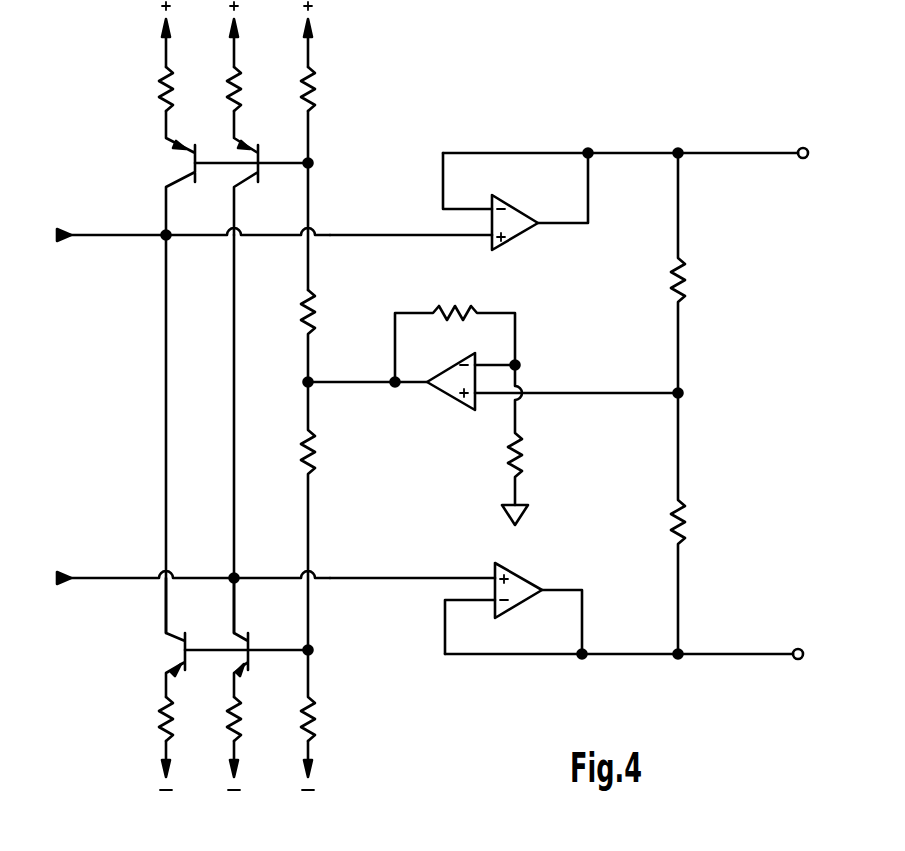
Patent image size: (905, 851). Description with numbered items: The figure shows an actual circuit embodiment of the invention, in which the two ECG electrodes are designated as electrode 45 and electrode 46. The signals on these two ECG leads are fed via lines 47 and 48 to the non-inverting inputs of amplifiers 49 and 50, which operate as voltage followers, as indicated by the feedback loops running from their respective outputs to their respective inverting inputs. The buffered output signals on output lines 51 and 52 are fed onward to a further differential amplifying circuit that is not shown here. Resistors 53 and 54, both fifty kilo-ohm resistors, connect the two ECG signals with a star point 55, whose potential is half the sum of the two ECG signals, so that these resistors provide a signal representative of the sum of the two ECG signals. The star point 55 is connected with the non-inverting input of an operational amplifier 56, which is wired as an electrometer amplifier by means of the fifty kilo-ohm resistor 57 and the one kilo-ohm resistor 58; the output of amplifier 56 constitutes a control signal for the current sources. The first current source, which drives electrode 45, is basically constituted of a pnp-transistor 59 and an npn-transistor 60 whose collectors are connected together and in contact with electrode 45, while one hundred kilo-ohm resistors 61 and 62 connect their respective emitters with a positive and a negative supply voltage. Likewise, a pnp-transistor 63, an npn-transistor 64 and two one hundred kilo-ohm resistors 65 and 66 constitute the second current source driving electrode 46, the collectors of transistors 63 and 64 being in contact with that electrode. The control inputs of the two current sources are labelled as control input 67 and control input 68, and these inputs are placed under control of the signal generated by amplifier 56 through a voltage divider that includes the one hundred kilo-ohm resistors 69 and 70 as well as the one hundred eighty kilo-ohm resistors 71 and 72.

The ECG electrode 45 is at (57, 237).
The ECG electrode 46 is at (57, 580).
The line 47 is at (382, 235).
The line 48 is at (385, 578).
The amplifier 49 is at (526, 229).
The amplifier 50 is at (525, 586).
The output line 51 is at (805, 158).
The output line 52 is at (800, 659).
The resistor 53 is at (685, 262).
The resistor 54 is at (685, 505).
The star point 55 is at (683, 393).
The operational amplifier 56 is at (448, 393).
The resistor 57 is at (435, 305).
The resistor 58 is at (520, 440).
The pnp-transistor 59 is at (174, 182).
The npn-transistor 60 is at (166, 638).
The resistor 61 is at (166, 86).
The resistor 62 is at (160, 728).
The pnp-transistor 63 is at (240, 176).
The npn-transistor 64 is at (236, 632).
The resistor 65 is at (236, 88).
The resistor 66 is at (237, 717).
The control input 67 is at (312, 163).
The control input 68 is at (312, 650).
The resistor 69 is at (310, 90).
The resistor 70 is at (312, 718).
The resistor 71 is at (303, 312).
The resistor 72 is at (305, 453).